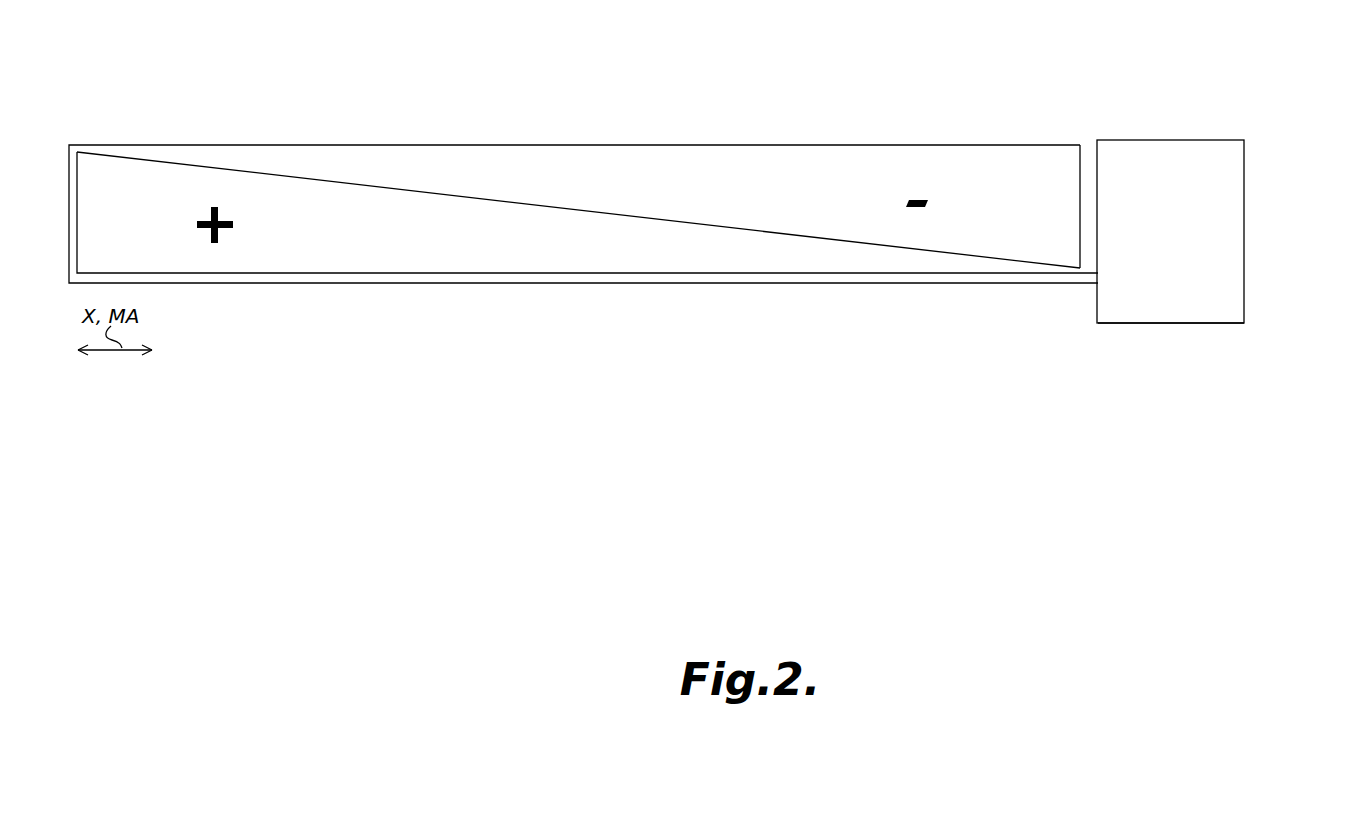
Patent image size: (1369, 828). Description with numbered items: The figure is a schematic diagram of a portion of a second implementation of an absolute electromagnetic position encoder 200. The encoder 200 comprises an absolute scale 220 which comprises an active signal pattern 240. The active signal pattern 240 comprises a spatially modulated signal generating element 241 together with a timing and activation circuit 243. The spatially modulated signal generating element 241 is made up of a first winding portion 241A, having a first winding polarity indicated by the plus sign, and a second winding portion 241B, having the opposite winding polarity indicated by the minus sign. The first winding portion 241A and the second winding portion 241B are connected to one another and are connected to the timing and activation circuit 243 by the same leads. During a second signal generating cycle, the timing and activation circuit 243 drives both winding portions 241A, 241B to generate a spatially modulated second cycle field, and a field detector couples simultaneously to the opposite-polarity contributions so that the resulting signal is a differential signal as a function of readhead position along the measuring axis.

The absolute electromagnetic position encoder 200 is at (712, 199).
The absolute scale 220 is at (1252, 223).
The active signal pattern 240 is at (740, 75).
The spatially modulated signal generating element 241 is at (578, 210).
The first winding portion 241A is at (315, 240).
The second winding portion 241B is at (672, 180).
The timing and activation circuit 243 is at (1130, 323).